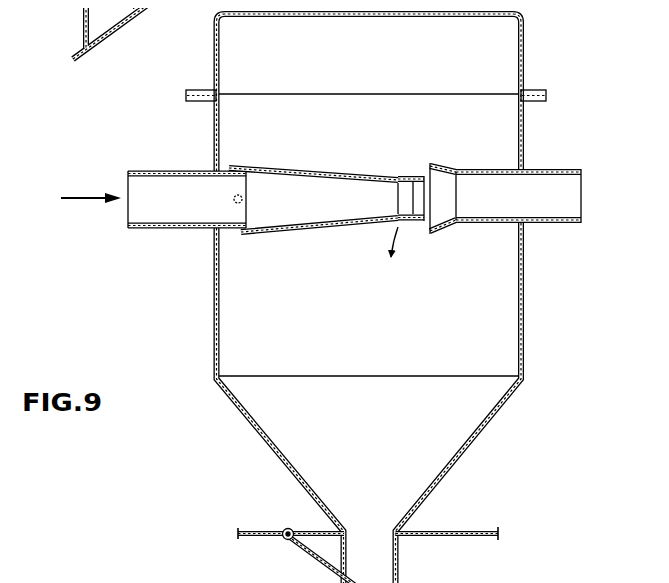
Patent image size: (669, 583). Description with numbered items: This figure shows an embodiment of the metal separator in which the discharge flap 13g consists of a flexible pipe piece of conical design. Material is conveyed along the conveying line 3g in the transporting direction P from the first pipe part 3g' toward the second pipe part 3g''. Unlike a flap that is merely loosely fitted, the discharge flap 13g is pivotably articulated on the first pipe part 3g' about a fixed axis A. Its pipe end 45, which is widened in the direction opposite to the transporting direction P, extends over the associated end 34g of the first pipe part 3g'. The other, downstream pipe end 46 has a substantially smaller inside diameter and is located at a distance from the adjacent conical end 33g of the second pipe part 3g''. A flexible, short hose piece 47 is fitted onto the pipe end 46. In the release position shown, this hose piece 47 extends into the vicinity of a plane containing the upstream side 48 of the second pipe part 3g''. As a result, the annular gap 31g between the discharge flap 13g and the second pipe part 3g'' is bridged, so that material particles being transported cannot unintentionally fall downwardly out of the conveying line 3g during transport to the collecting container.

The transporting direction P is at (91, 195).
The conveying line 3g is at (166, 234).
The first pipe part 3g' is at (176, 236).
The second pipe part 3g'' is at (522, 233).
The discharge flap 13g is at (297, 240).
The end of the first pipe part 34g is at (238, 234).
The pipe end 45 is at (245, 168).
The fixed axis A is at (242, 198).
The pipe end 46 is at (390, 175).
The annular gap 31g is at (427, 165).
The conical end 33g is at (435, 163).
The hose piece 47 is at (418, 221).
The upstream side 48 is at (428, 233).